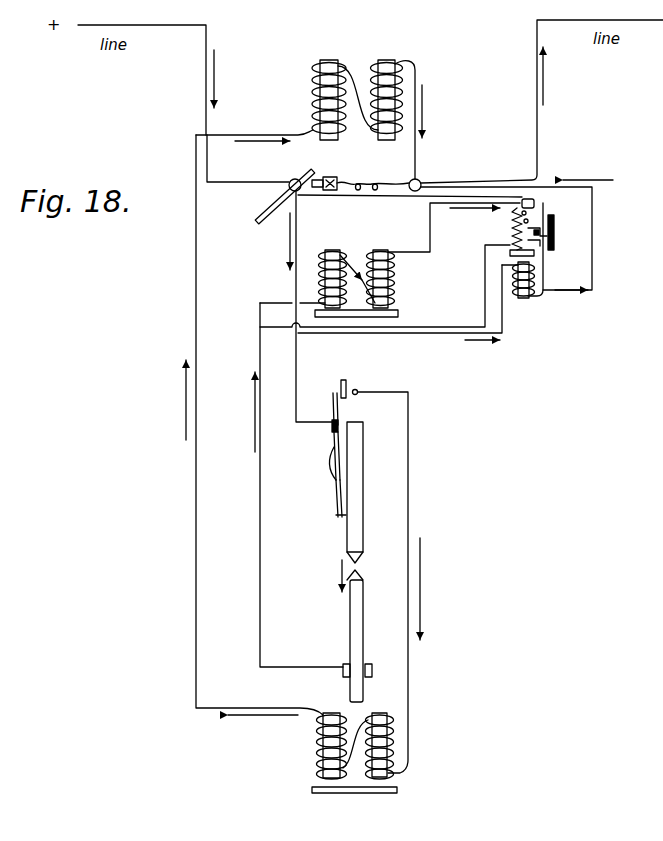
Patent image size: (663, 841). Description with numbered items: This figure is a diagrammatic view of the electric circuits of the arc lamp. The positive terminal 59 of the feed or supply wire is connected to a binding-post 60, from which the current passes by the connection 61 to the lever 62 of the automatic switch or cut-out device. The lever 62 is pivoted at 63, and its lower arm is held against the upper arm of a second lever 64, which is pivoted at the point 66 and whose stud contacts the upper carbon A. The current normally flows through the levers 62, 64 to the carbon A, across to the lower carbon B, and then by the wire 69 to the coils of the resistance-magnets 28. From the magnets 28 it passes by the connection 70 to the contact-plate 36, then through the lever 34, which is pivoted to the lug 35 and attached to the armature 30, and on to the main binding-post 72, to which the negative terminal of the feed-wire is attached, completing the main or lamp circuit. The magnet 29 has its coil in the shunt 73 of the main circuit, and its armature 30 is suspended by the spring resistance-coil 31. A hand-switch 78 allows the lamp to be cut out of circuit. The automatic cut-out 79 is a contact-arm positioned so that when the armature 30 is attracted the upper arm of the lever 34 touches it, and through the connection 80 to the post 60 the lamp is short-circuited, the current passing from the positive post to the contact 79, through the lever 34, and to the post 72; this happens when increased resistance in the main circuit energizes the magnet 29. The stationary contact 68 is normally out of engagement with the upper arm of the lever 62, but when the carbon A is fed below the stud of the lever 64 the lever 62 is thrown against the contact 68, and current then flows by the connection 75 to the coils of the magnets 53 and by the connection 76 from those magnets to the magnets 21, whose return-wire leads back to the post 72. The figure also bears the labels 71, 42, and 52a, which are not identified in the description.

The magnets 21 is at (367, 107).
The positive terminal of the feed or supply wire 59 is at (540, 128).
The binding-post 60 is at (295, 178).
The main binding-post 72 is at (420, 179).
The hand-switch 78 is at (333, 178).
The automatic cut-out 79 is at (535, 200).
The connection 80 is at (360, 198).
The connection 70 is at (433, 226).
The spring resistance-coil 31 is at (511, 226).
The contact-plate 36 is at (556, 218).
The lug 35 is at (550, 233).
The lever 34 is at (533, 243).
The armature 30 is at (536, 253).
The conductor 71 is at (548, 268).
The magnet 29 is at (532, 324).
The shunt 73 is at (451, 336).
The resistance-magnets 28 is at (357, 268).
The core plate 42 is at (398, 312).
The connection 61 is at (298, 351).
The stationary contact 68 is at (347, 383).
The pivot 63 is at (332, 416).
The lever of automatic switch 62 is at (333, 431).
The pivot point 66 is at (330, 478).
The second lever 64 is at (336, 495).
The connection 76 is at (197, 457).
The wire 69 is at (262, 553).
The connection 75 is at (413, 482).
The upper carbon A is at (365, 526).
The lower carbon B is at (365, 598).
The magnets 53 is at (355, 746).
The armature plate 52a is at (353, 793).